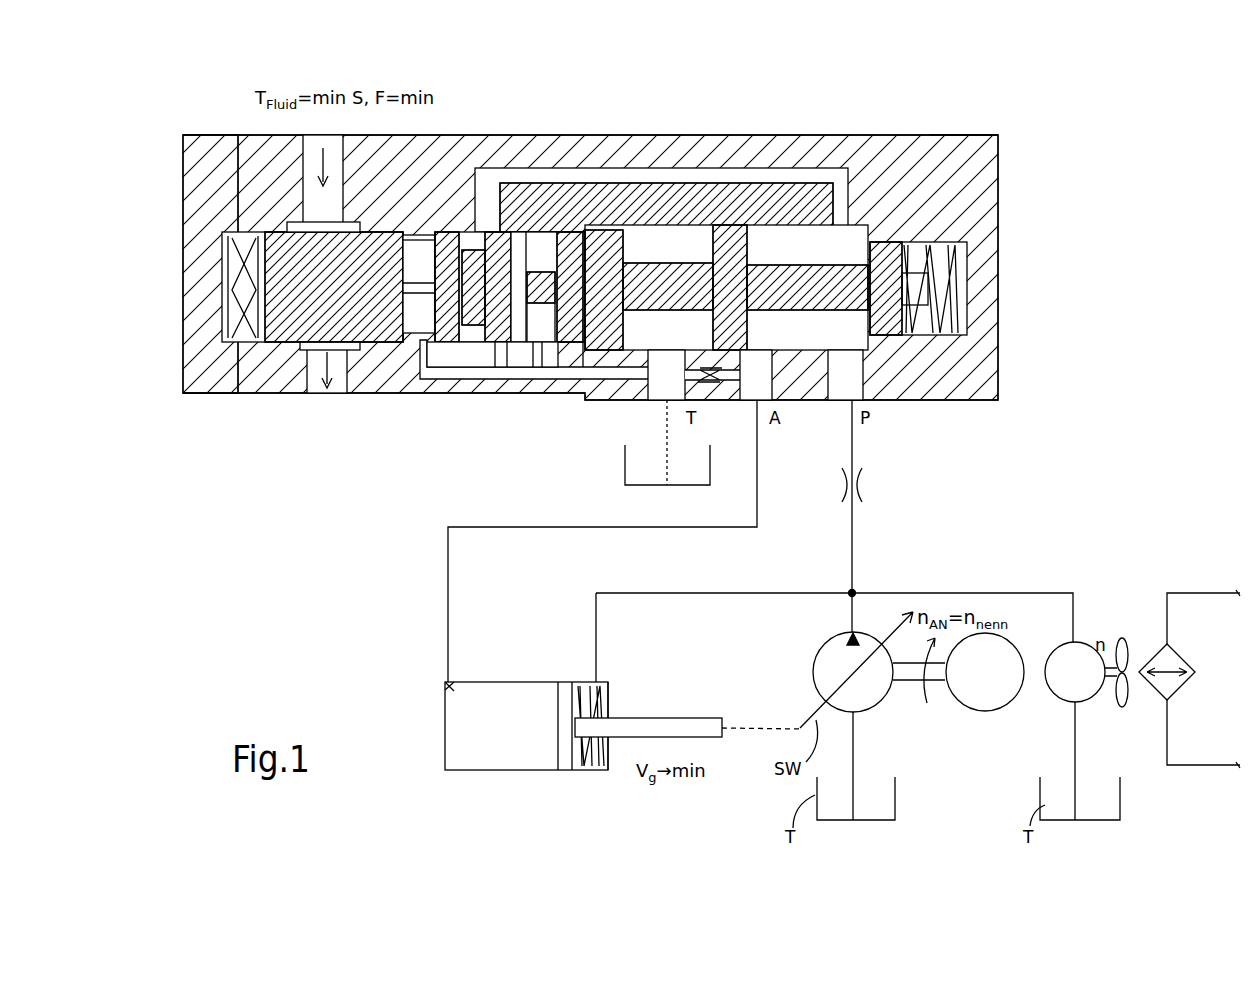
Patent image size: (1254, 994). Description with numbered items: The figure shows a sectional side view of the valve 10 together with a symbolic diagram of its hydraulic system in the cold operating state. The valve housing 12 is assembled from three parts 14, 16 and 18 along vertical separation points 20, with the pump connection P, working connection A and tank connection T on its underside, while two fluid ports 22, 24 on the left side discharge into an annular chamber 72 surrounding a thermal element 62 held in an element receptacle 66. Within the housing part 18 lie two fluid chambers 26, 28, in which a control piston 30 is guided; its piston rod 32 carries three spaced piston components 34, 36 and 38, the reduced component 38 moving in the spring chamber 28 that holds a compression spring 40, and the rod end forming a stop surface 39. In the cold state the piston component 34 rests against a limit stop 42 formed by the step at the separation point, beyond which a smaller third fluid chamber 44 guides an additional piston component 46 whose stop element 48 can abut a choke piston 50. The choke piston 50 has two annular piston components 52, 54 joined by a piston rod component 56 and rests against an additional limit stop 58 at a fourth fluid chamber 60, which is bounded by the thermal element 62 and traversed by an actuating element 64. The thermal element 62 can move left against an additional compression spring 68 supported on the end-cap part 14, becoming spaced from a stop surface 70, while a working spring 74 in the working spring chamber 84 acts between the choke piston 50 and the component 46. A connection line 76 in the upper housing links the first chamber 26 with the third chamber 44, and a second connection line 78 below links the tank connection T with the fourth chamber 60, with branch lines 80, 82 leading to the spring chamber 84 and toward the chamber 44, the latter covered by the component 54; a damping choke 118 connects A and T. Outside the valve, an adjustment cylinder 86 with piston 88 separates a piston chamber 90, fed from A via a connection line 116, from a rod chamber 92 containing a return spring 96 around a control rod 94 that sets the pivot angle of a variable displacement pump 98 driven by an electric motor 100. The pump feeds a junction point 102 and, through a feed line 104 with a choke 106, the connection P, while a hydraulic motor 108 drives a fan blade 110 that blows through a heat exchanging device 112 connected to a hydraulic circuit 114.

The valve 10 is at (958, 99).
The valve housing 12 is at (960, 163).
The valve housing part 14 is at (198, 135).
The valve housing part 16 is at (565, 232).
The valve housing part 18 is at (730, 225).
The separation point 20 is at (237, 135).
The fluid port 22 is at (333, 135).
The fluid port 24 is at (322, 362).
The fluid chamber 26 is at (880, 242).
The fluid chamber 28 is at (945, 233).
The control piston 30 is at (640, 262).
The piston rod 32 is at (668, 285).
The piston component 34 is at (598, 378).
The piston component 36 is at (770, 230).
The piston component 38 is at (950, 135).
The stop surface 39 is at (935, 322).
The compression spring 40 is at (935, 287).
The limit stop 42 is at (548, 378).
The fluid chamber 44 is at (519, 240).
The additional piston component 46 is at (590, 232).
The stop element 48 is at (470, 332).
The choke piston 50 is at (468, 250).
The piston component 52 is at (450, 342).
The piston component 54 is at (497, 370).
The piston rod component 56 is at (492, 232).
The limit stop 58 is at (440, 232).
The fluid chamber 60 is at (405, 240).
The thermal element 62 is at (262, 372).
The actuating element 64 is at (404, 290).
The element receptacle 66 is at (290, 350).
The compression spring 68 is at (232, 336).
The stop surface 70 is at (420, 352).
The annular chamber 72 is at (284, 365).
The working spring 74 is at (508, 362).
The connection line 76 is at (815, 178).
The connection line 78 is at (616, 400).
The branch line 80 is at (527, 345).
The branch line 82 is at (470, 393).
The working spring chamber 84 is at (548, 240).
The adjustment cylinder 86 is at (510, 772).
The piston 88 is at (562, 772).
The piston chamber 90 is at (470, 762).
The rod chamber 92 is at (596, 772).
The control rod 94 is at (630, 724).
The return spring 96 is at (598, 695).
The variable displacement pump 98 is at (875, 692).
The electric motor 100 is at (987, 711).
The junction point 102 is at (858, 590).
The feed line 104 is at (855, 530).
The choke 106 is at (862, 490).
The hydraulic motor 108 is at (1075, 642).
The fan blade 110 is at (1121, 710).
The heat exchanging device 112 is at (1160, 650).
The hydraulic circuit 114 is at (1187, 768).
The connection line 116 is at (700, 530).
The damping choke 118 is at (715, 382).